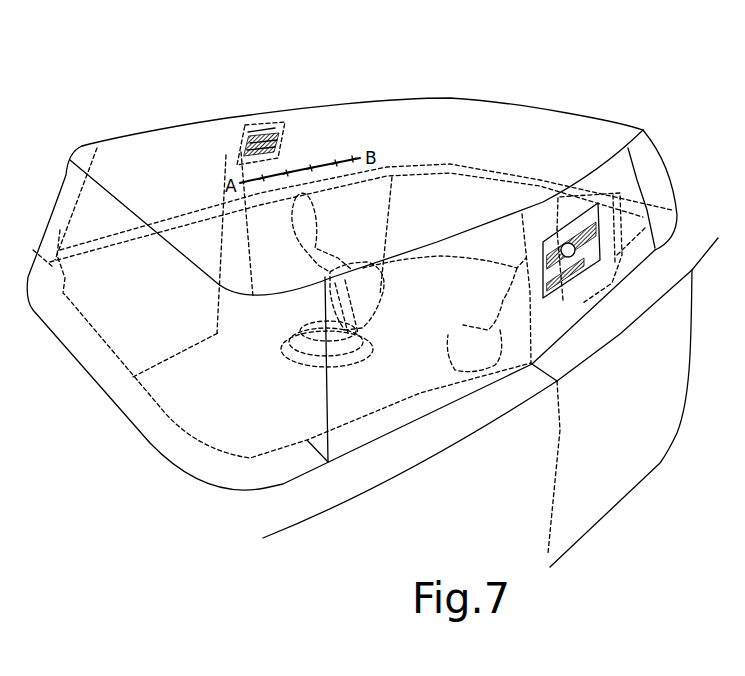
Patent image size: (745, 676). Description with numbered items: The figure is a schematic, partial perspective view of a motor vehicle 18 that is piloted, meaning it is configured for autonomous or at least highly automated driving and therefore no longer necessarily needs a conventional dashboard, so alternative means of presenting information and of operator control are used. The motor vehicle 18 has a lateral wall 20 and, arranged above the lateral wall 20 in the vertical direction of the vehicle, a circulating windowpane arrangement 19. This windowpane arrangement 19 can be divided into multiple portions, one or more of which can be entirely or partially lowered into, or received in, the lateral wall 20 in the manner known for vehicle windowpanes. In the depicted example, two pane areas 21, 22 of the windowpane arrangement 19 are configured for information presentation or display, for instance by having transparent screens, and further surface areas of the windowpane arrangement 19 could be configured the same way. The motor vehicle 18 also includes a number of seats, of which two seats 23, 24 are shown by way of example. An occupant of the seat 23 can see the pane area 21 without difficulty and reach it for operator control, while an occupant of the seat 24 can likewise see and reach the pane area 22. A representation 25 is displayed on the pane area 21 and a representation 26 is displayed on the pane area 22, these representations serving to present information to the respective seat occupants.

The windowpane arrangement 19 is at (142, 153).
The pane area 21 is at (328, 117).
The pane area 22 is at (543, 218).
The seat 23 is at (280, 308).
The seat 24 is at (507, 300).
The representation 25 is at (260, 127).
The representation 26 is at (576, 287).
The motor vehicle 18 is at (490, 402).
The lateral wall 20 is at (648, 473).